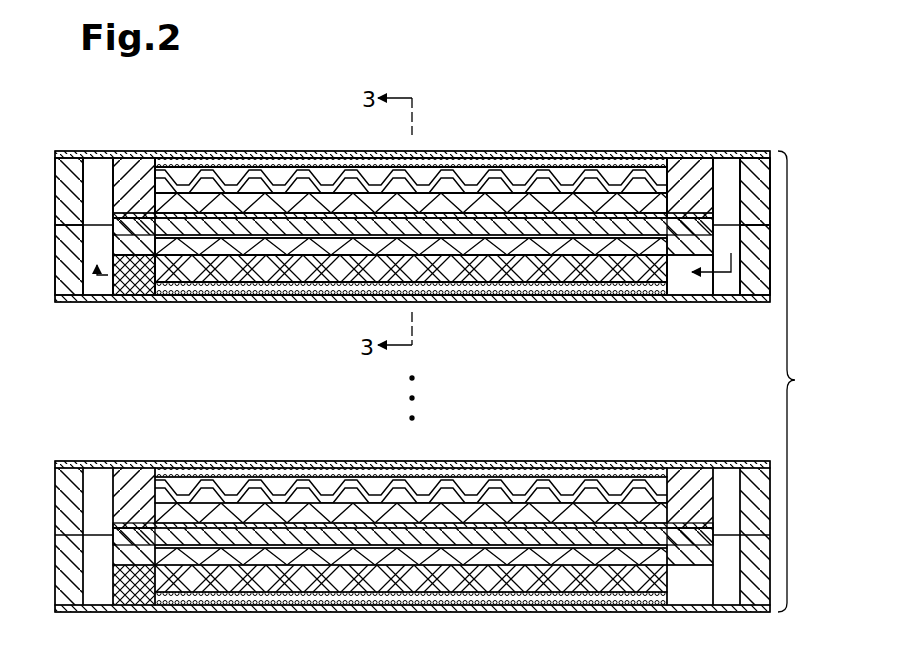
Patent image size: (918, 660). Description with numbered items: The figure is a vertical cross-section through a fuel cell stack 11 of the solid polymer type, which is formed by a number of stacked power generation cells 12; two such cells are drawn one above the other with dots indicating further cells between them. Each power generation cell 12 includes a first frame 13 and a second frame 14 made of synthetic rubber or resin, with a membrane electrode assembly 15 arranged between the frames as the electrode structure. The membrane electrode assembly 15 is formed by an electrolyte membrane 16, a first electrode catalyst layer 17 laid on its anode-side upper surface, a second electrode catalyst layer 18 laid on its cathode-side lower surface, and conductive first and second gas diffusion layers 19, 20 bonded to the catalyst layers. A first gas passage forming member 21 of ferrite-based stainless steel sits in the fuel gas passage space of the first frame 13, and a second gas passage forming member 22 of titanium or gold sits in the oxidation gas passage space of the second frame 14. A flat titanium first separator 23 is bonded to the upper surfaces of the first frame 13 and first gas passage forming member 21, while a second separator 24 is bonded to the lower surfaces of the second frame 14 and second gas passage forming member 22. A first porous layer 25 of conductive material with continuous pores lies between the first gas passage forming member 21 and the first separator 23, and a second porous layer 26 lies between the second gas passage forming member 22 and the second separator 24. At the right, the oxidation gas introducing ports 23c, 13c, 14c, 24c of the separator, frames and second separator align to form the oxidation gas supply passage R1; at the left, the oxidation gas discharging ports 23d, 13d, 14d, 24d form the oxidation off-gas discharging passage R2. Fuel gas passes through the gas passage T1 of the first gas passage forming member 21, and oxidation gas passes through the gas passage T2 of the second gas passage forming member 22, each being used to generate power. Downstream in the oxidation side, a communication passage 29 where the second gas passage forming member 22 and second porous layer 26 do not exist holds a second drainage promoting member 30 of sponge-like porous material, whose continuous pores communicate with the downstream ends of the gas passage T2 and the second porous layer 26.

The fuel cell stack 11 is at (803, 381).
The power generation cell 12 is at (530, 140).
The first frame 13 is at (662, 150).
The oxidation gas introducing port 13c is at (745, 152).
The oxidation gas discharging port 13d is at (85, 150).
The second frame 14 is at (752, 292).
The oxidation gas introducing port 14c is at (730, 300).
The oxidation gas discharging port 14d is at (86, 302).
The membrane electrode assembly 15 is at (433, 210).
The electrolyte membrane 16 is at (244, 180).
The first electrode catalyst layer 17 is at (304, 200).
The second electrode catalyst layer 18 is at (302, 245).
The first gas diffusion layer 19 is at (494, 178).
The second gas diffusion layer 20 is at (493, 275).
The first gas passage forming member 21 is at (572, 165).
The second gas passage forming member 22 is at (536, 270).
The first separator 23 is at (607, 150).
The oxidation gas introducing port 23c is at (712, 150).
The oxidation gas discharging port 23d is at (107, 150).
The second separator 24 is at (600, 302).
The oxidation gas introducing port 24c is at (700, 292).
The oxidation gas discharging port 24d is at (102, 302).
The first porous layer 25 is at (202, 162).
The second porous layer 26 is at (241, 290).
The communication passage 29 is at (150, 296).
The second drainage promoting member 30 is at (148, 298).
The oxidation gas supply passage R1 is at (727, 172).
The oxidation off-gas discharging passage R2 is at (97, 175).
The gas passage T1 is at (347, 183).
The gas passage T2 is at (346, 265).